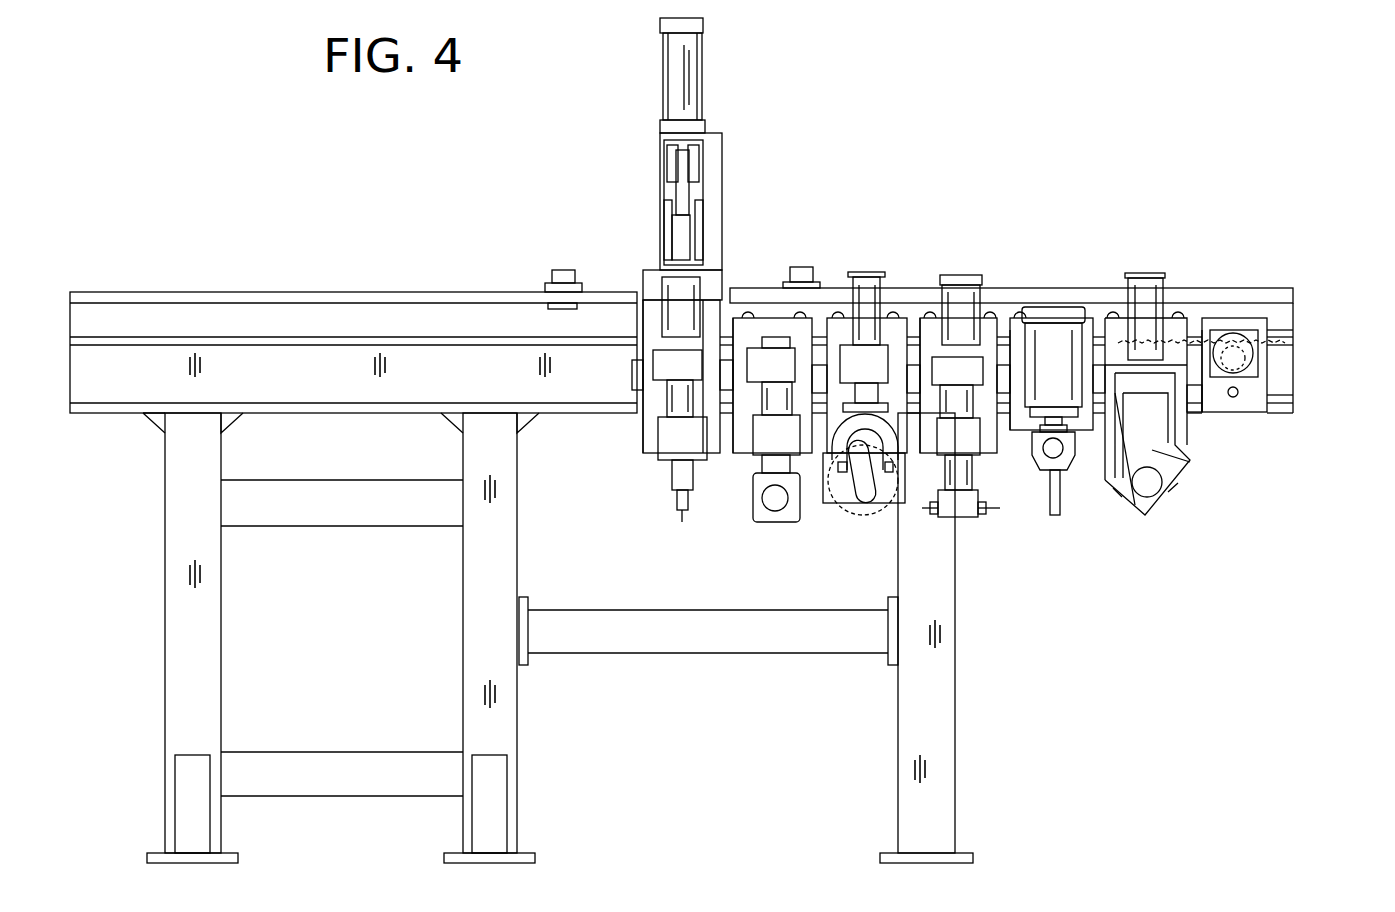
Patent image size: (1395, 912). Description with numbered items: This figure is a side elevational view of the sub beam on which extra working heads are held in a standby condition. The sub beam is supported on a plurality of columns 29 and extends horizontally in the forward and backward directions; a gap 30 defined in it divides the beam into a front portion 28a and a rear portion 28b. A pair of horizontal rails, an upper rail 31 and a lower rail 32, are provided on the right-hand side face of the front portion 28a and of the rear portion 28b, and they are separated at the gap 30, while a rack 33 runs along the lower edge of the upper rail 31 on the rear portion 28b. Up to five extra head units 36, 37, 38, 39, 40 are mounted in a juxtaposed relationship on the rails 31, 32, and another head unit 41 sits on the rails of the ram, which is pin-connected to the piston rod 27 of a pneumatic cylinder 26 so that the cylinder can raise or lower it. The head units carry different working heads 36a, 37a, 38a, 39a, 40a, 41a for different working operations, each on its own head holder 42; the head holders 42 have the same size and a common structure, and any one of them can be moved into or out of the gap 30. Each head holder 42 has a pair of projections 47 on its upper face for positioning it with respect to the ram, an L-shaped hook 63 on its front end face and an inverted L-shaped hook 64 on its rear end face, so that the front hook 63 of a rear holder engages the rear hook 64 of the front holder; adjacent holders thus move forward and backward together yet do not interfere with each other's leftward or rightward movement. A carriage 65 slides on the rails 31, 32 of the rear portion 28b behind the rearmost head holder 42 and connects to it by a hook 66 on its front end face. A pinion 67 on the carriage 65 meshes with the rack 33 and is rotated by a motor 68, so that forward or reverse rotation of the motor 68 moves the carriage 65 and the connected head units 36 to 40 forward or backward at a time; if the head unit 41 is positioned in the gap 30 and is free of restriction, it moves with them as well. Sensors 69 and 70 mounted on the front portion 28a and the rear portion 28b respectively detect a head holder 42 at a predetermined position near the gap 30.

The pneumatic cylinder 26 is at (685, 77).
The piston rod 27 is at (678, 172).
The front portion 28a is at (310, 300).
The rear portion 28b is at (1000, 300).
The columns 29 is at (222, 590).
The gap 30 is at (640, 292).
The upper rail 31 is at (118, 340).
The lower rail 32 is at (88, 414).
The rack 33 is at (1197, 357).
The extra head unit 36 is at (765, 318).
The working head 36a is at (803, 512).
The extra head unit 37 is at (880, 330).
The working head 37a is at (860, 492).
The extra head unit 38 is at (972, 262).
The working head 38a is at (985, 492).
The extra head unit 39 is at (1070, 318).
The working head 39a is at (1068, 457).
The extra head unit 40 is at (1164, 268).
The working head 40a is at (1168, 468).
The head unit 41 is at (705, 272).
The working head 41a is at (675, 437).
The head holder 42 is at (650, 420).
The projections 47 is at (837, 316).
The L-shaped hook 63 is at (632, 385).
The inverted L-shaped hook 64 is at (713, 372).
The carriage 65 is at (1252, 400).
The hook 66 is at (1195, 412).
The pinion 67 is at (1273, 322).
The motor 68 is at (1265, 360).
The sensor 69 is at (562, 272).
The sensor 70 is at (808, 280).